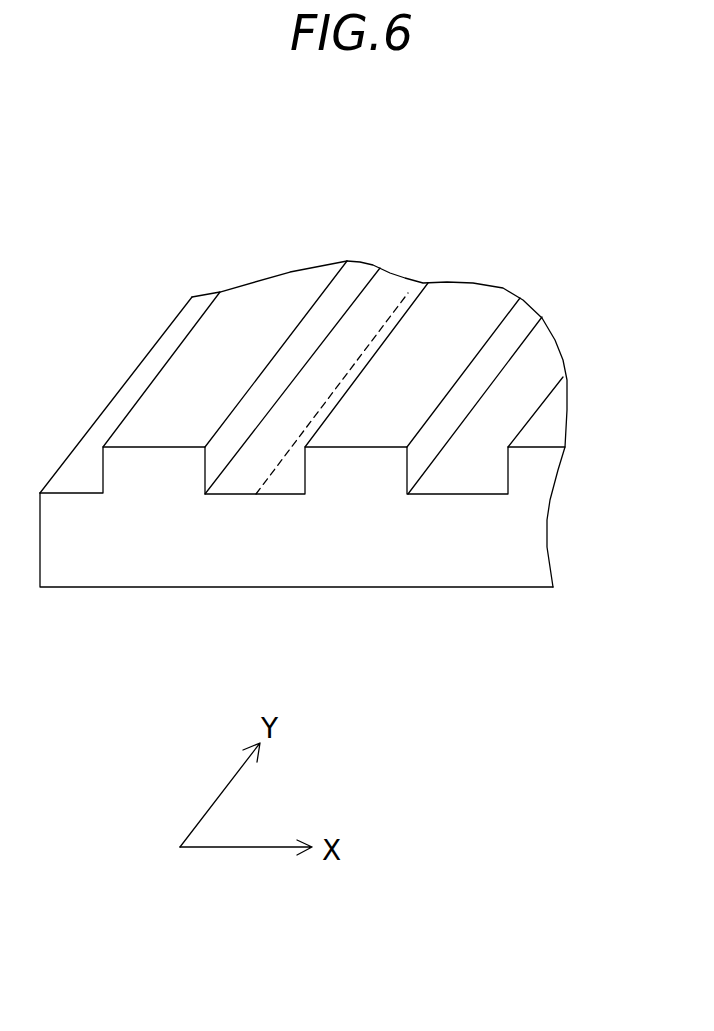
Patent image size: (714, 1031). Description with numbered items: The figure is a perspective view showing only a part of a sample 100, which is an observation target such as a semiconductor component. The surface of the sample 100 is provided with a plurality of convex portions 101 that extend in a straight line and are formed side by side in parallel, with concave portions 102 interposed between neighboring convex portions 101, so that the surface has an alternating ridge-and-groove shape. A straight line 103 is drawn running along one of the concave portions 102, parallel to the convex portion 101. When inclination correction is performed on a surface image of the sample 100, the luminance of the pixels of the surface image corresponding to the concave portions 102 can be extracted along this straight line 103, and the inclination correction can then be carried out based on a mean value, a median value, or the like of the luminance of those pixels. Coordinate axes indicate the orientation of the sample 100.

The sample 100 is at (531, 213).
The convex portion 101 is at (470, 298).
The concave portion 102 is at (488, 487).
The straight line 103 is at (278, 463).